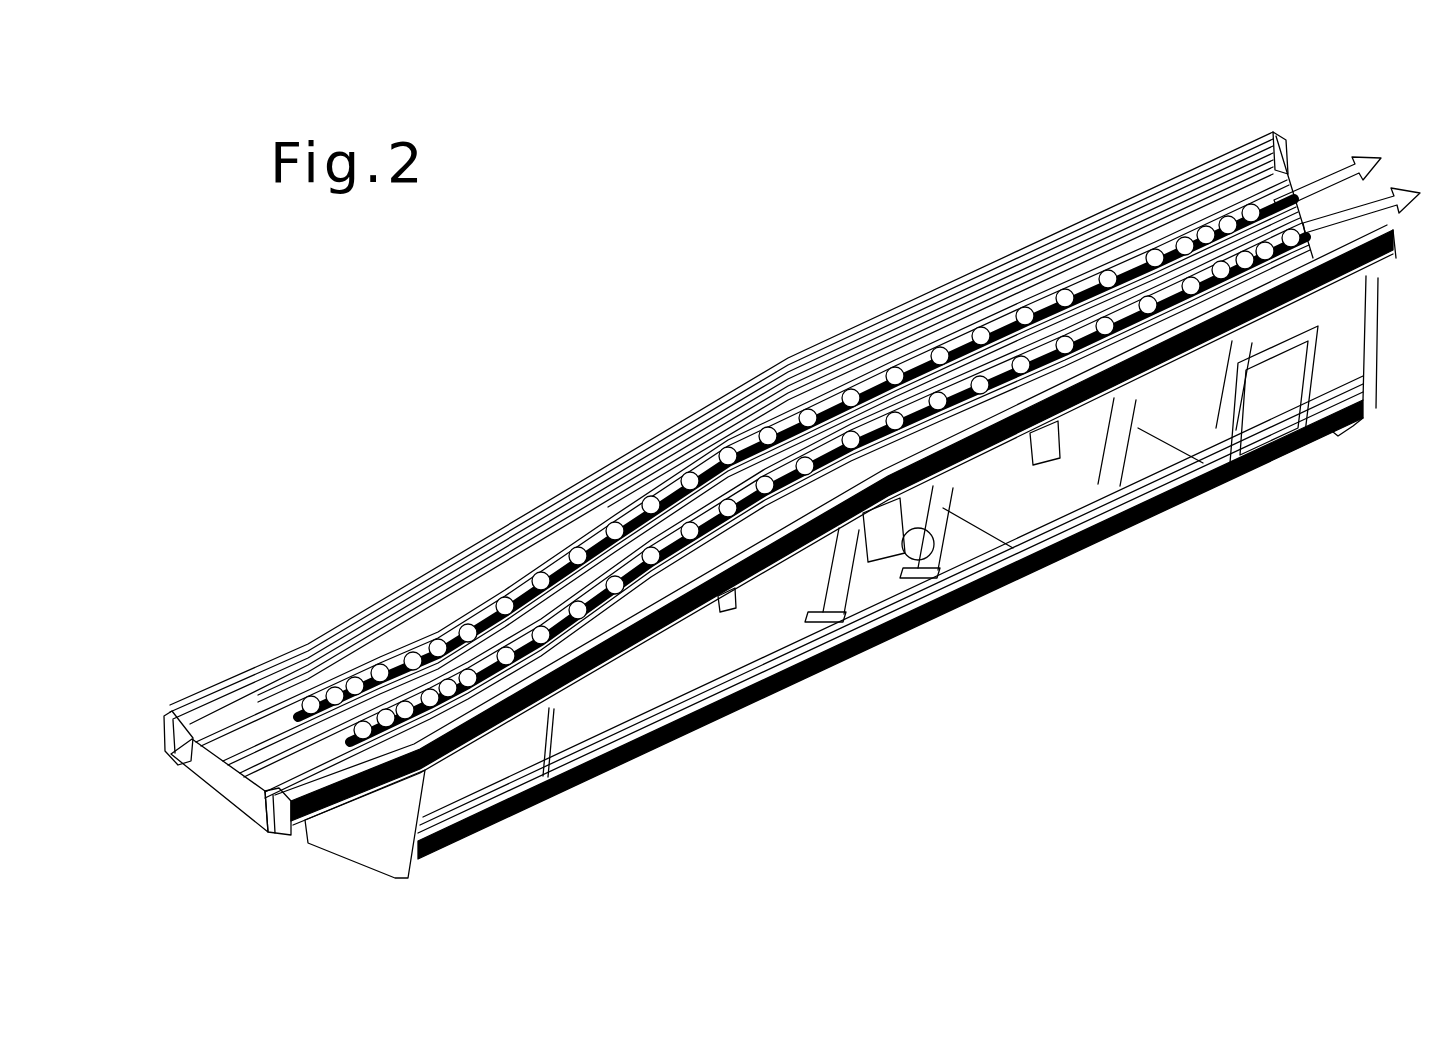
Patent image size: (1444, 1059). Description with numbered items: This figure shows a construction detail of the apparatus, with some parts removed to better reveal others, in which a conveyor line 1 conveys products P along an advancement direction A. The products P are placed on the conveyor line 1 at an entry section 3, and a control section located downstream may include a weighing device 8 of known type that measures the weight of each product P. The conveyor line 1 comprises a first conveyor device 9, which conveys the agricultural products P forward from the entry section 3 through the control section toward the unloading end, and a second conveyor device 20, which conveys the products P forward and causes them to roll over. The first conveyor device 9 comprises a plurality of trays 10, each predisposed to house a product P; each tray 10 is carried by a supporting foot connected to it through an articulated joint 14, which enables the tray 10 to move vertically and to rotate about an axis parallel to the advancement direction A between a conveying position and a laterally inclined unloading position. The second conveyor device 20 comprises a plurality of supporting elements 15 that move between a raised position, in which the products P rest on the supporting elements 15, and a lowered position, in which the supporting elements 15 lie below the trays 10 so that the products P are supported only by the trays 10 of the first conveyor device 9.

The conveyor line 1 is at (740, 410).
The entry section 3 is at (372, 572).
The weighing device 8 is at (1250, 327).
The first conveyor device 9 is at (1040, 296).
The tray 10 is at (503, 577).
The articulated joint 14 is at (870, 374).
The supporting element 15 is at (778, 392).
The second conveyor device 20 is at (1152, 383).
The product P is at (568, 545).
The advancement direction A is at (1365, 205).